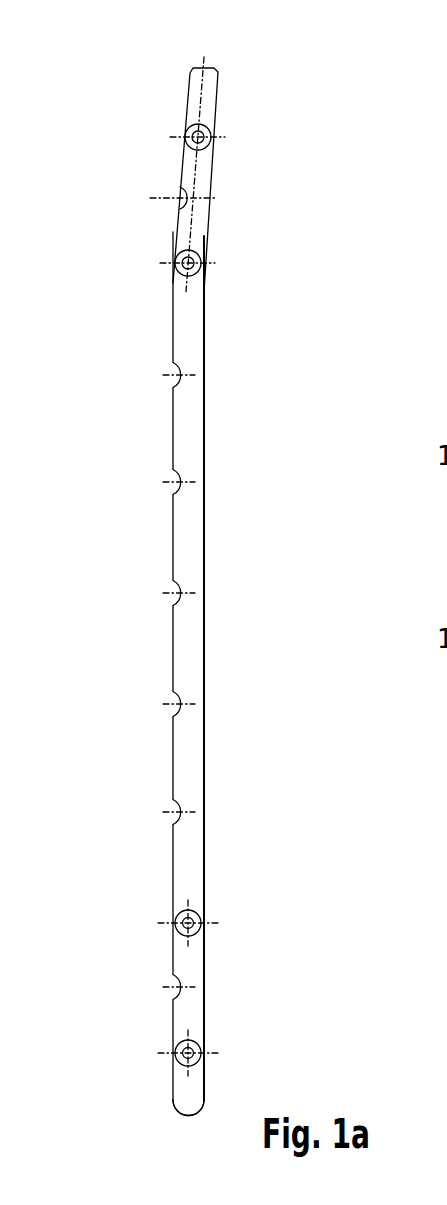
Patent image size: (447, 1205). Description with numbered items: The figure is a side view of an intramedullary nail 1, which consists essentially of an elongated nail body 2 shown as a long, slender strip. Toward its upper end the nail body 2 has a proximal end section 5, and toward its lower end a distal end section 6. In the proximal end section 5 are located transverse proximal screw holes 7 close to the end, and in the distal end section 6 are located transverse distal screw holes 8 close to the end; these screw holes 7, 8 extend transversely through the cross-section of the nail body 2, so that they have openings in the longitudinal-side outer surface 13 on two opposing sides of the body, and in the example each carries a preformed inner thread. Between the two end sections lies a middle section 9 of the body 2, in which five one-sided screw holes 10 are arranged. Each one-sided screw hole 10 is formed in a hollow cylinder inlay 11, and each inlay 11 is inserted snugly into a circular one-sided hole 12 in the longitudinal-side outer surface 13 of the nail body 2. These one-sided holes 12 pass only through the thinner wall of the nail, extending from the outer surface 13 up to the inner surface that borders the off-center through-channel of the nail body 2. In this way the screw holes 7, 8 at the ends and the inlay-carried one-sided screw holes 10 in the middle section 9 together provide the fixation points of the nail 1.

The intramedullary nail 1 is at (262, 320).
The nail body 2 is at (187, 652).
The proximal end section 5 is at (190, 110).
The distal end section 6 is at (190, 1093).
The proximal screw holes 7 is at (205, 930).
The distal screw holes 8 is at (190, 252).
The middle section 9 is at (183, 543).
The one-sided screw holes 10 is at (181, 592).
The hollow cylinder inlay 11 is at (177, 806).
The one-sided hole 12 is at (178, 370).
The longitudinal-side outer surface 13 is at (170, 298).